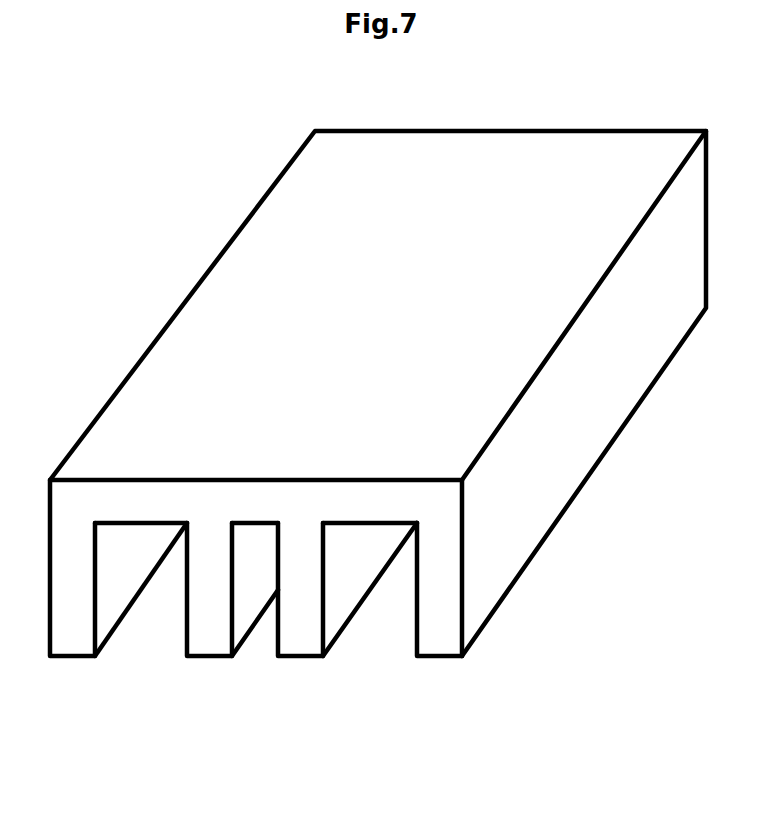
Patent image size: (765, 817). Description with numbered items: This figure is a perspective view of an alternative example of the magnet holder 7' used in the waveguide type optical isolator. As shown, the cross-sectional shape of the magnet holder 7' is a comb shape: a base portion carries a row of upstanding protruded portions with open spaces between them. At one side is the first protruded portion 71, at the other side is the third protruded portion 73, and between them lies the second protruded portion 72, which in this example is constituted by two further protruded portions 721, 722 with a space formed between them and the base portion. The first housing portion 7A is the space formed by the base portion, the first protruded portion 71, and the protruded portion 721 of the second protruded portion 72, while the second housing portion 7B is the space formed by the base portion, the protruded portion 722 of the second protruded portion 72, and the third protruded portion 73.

The magnet holder 7' is at (376, 456).
The first protruded portion 71 is at (72, 633).
The first housing portion 7A is at (143, 630).
The second protruded portion 72 is at (249, 652).
The protruded portion 721 is at (208, 633).
The protruded portion 722 is at (299, 629).
The second housing portion 7B is at (382, 630).
The third protruded portion 73 is at (442, 635).